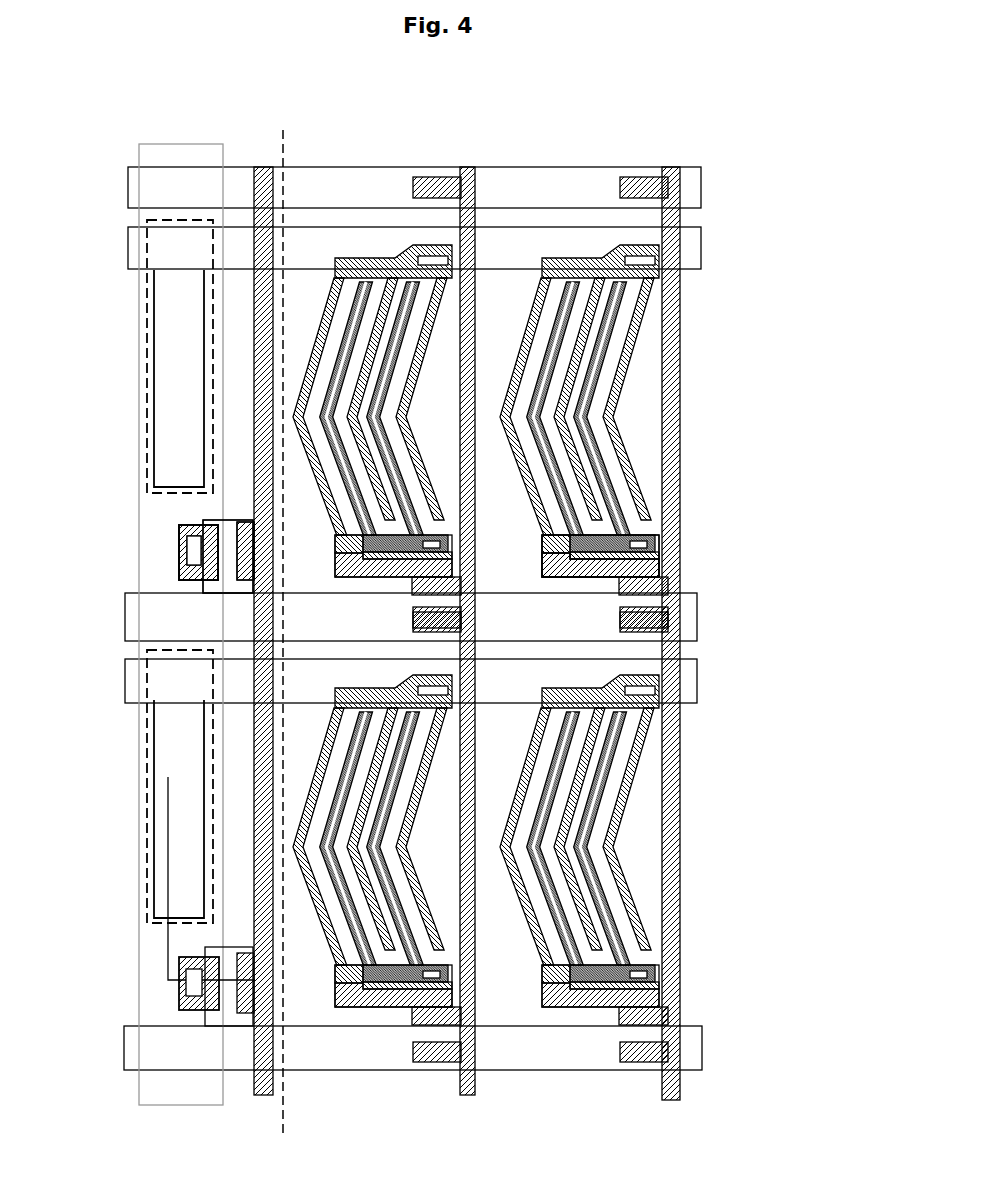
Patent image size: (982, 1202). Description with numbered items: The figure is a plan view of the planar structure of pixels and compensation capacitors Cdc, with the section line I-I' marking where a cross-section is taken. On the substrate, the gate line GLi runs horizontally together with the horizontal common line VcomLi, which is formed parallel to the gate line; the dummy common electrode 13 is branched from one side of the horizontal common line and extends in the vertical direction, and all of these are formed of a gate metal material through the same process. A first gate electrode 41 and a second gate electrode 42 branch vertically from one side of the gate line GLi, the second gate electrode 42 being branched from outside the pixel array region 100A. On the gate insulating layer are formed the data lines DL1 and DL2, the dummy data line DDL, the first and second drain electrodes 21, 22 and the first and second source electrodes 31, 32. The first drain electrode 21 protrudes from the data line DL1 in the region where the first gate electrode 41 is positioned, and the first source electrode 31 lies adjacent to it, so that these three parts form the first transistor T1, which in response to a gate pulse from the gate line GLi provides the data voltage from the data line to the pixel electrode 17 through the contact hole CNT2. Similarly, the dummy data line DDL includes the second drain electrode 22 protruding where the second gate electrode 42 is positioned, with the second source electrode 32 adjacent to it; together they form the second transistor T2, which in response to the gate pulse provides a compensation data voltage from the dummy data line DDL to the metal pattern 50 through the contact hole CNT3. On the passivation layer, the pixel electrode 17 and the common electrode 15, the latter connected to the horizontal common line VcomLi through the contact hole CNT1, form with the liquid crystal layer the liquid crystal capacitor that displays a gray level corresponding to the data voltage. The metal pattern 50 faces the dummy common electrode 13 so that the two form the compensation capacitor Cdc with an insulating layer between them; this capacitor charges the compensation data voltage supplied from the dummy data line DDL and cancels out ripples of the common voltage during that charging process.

The metal pattern 50 is at (178, 143).
The dummy data line DDL is at (258, 165).
The data line DL1 is at (466, 165).
The data line DL2 is at (668, 165).
The horizontal common line VcomLi is at (701, 249).
The first contact hole CNT1 is at (652, 261).
The common electrode 15 is at (637, 323).
The compensation capacitor Cdc is at (147, 355).
The dummy common electrode 13 is at (165, 393).
The second transistor T2 is at (75, 502).
The second gate electrode 42 is at (228, 530).
The second source electrode 32 is at (177, 531).
The second drain electrode 22 is at (250, 555).
The third contact hole CNT3 is at (186, 548).
The pixel electrode 17 is at (613, 487).
The second contact hole CNT2 is at (643, 537).
The first source electrode 31 is at (673, 568).
The first gate electrode 41 is at (647, 582).
The first drain electrode 21 is at (643, 613).
The first transistor T1 is at (740, 545).
The gate line GLi is at (697, 628).
The pixel array region 100A is at (703, 1120).
The line I-I' I is at (213, 874).